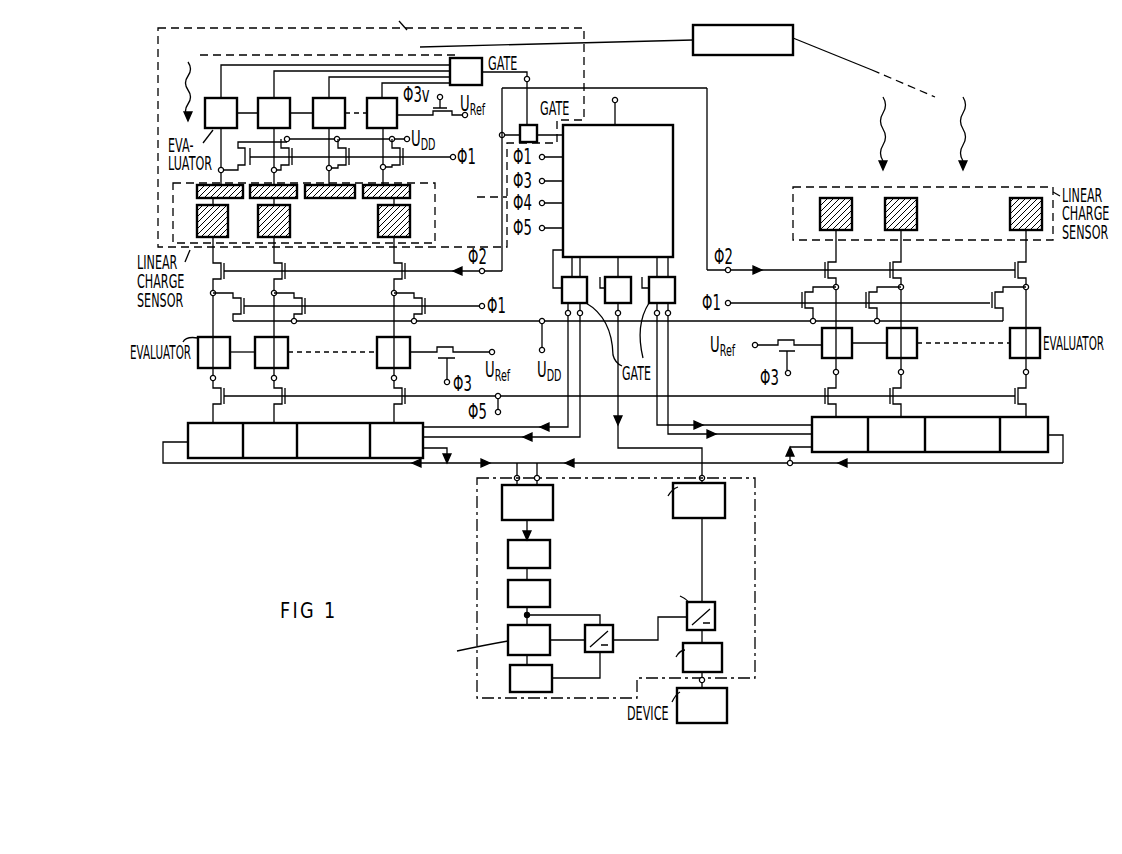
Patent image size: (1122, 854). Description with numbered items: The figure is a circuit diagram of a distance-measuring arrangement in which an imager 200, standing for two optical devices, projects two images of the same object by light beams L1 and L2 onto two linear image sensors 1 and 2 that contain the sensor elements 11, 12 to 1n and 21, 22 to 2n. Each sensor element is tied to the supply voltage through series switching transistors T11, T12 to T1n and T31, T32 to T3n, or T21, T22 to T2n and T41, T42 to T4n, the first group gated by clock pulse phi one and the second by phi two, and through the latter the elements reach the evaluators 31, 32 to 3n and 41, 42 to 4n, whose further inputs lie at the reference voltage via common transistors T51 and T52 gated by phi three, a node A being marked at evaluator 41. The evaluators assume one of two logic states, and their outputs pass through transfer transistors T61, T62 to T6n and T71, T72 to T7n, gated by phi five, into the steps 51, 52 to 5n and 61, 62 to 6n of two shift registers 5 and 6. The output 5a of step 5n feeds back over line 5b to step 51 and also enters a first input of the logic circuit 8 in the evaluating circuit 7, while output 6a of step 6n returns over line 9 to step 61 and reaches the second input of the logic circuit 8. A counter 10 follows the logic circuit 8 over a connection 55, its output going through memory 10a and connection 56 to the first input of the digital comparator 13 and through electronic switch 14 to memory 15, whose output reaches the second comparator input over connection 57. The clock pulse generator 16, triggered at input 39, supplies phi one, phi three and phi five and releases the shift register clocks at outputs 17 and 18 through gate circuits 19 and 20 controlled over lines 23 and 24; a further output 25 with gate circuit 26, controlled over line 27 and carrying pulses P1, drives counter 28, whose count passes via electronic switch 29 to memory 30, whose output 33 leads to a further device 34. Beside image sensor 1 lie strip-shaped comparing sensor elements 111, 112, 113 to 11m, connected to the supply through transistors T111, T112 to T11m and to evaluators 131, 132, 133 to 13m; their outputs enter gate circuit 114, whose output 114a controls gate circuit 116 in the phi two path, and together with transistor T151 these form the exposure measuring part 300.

The exposure measuring part 300 is at (474, 29).
The imager 200 is at (730, 55).
The light beams L1 is at (178, 91).
The light beams L2 is at (923, 133).
The linear image sensor 1 is at (318, 212).
The sensor element 11 is at (204, 221).
The sensor element 12 is at (265, 221).
The sensor element 1n is at (405, 221).
The comparing sensor element 111 is at (208, 193).
The comparing sensor element 112 is at (296, 198).
The comparing sensor element 113 is at (340, 198).
The comparing sensor element 11m is at (410, 192).
The evaluator 131 is at (327, 96).
The evaluator 132 is at (354, 99).
The evaluator 133 is at (381, 102).
The evaluator 13m is at (408, 105).
The switching transistor T111 is at (252, 162).
The switching transistor T112 is at (301, 160).
The switching transistor T11m is at (412, 160).
The switching transistor T151 is at (445, 119).
The gate circuit 114 is at (466, 71).
The gate output node 114a is at (523, 92).
The gate circuit 116 is at (531, 121).
The input 39 is at (624, 106).
The clock pulse generator 16 is at (618, 190).
The line 23 is at (546, 269).
The line 27 is at (597, 275).
The line 24 is at (642, 290).
The gate circuit 19 is at (574, 290).
The gate circuit 26 is at (618, 290).
The gate circuit 20 is at (662, 290).
The outputs 17 is at (582, 318).
The output 25 is at (620, 318).
The outputs 18 is at (670, 318).
The pulse signal line P1 is at (610, 432).
The switching transistor T31 is at (233, 264).
The switching transistor T32 is at (293, 264).
The switching transistor T3n is at (413, 264).
The switching transistor T11 is at (242, 302).
The switching transistor T12 is at (303, 302).
The switching transistor T1n is at (424, 301).
The evaluator 31 is at (214, 352).
The evaluator 32 is at (271, 352).
The evaluator 3n is at (393, 352).
The switching transistor T51 is at (452, 353).
The transfer transistor T61 is at (233, 401).
The transfer transistor T62 is at (293, 401).
The transfer transistor T6n is at (413, 401).
The shift register 5 is at (305, 428).
The step 51 is at (214, 441).
The step 52 is at (269, 441).
The step 5n is at (395, 441).
The output 5a is at (438, 472).
The line 5b is at (290, 470).
The linear image sensor 2 is at (916, 213).
The sensor element 21 is at (825, 214).
The sensor element 22 is at (911, 214).
The sensor element 2n is at (1014, 214).
The switching transistor T41 is at (845, 263).
The switching transistor T42 is at (910, 263).
The switching transistor T4n is at (1035, 263).
The switching transistor T21 is at (805, 299).
The switching transistor T22 is at (874, 299).
The switching transistor T2n is at (994, 299).
The evaluator 41 is at (837, 343).
The evaluator 42 is at (902, 343).
The evaluator 4n is at (1025, 343).
The switching transistor T52 is at (787, 346).
The node A is at (842, 375).
The transfer transistor T71 is at (817, 400).
The transfer transistor T72 is at (881, 400).
The transfer transistor T7n is at (1006, 400).
The shift register 6 is at (930, 421).
The step 61 is at (839, 435).
The step 62 is at (895, 435).
The step 6n is at (1023, 435).
The line 9 is at (794, 449).
The output 6a is at (790, 466).
The evaluating circuit 7 is at (755, 585).
The logic circuit 8 is at (527, 502).
The connection line 55 is at (531, 522).
The counter 10 is at (529, 554).
The memory 10a is at (529, 593).
The connection line 56 is at (522, 617).
The digital comparator 13 is at (529, 640).
The connection line 57 is at (525, 660).
The memory 15 is at (531, 678).
The electronic switch 14 is at (609, 630).
The electronic switch 29 is at (712, 616).
The counter 28 is at (699, 499).
The memory 30 is at (702, 657).
The output 33 is at (706, 682).
The device 34 is at (702, 705).